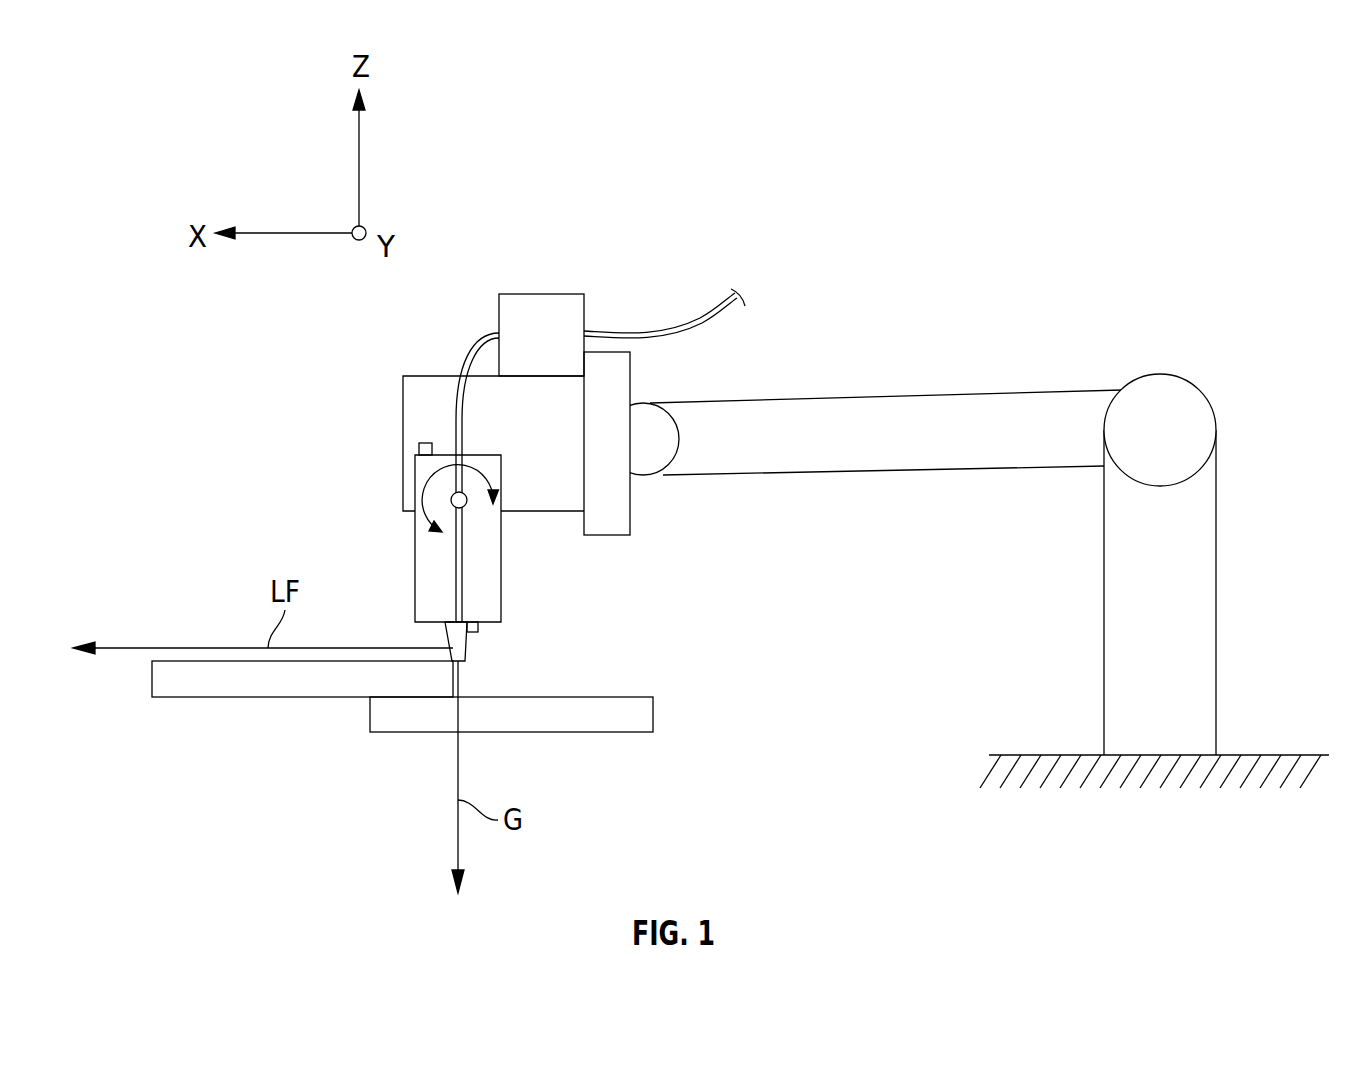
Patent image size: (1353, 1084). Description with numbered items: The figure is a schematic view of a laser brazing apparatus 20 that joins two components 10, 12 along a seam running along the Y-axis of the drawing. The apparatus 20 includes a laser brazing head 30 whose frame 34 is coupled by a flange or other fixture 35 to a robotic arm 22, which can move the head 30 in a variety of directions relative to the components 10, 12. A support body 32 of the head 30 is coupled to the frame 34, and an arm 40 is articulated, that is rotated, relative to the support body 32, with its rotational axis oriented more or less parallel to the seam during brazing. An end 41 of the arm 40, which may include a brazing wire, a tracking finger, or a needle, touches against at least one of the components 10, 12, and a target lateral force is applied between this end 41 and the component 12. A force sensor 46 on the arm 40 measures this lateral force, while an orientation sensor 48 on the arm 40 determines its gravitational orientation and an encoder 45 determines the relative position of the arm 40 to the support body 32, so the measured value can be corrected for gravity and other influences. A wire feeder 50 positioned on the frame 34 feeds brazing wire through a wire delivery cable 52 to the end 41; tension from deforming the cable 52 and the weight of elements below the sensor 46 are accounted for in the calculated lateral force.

The component 10 is at (653, 715).
The component 12 is at (183, 698).
The laser brazing apparatus 20 is at (968, 526).
The robotic arm 22 is at (990, 393).
The laser brazing head 30 is at (519, 460).
The support body 32 is at (426, 376).
The frame 34 is at (606, 536).
The flange or fixture 35 is at (661, 476).
The arm 40 is at (502, 577).
The end 41 is at (462, 661).
The encoder 45 is at (447, 499).
The force sensor 46 is at (478, 628).
The orientation sensor 48 is at (419, 449).
The wire feeder 50 is at (542, 293).
The wire delivery cable 52 is at (485, 332).